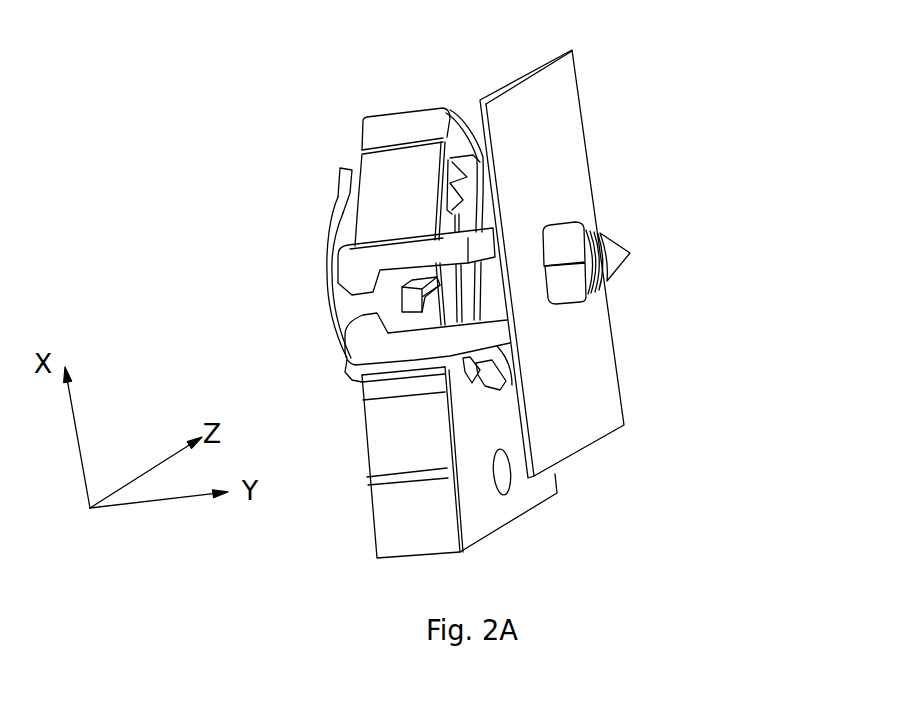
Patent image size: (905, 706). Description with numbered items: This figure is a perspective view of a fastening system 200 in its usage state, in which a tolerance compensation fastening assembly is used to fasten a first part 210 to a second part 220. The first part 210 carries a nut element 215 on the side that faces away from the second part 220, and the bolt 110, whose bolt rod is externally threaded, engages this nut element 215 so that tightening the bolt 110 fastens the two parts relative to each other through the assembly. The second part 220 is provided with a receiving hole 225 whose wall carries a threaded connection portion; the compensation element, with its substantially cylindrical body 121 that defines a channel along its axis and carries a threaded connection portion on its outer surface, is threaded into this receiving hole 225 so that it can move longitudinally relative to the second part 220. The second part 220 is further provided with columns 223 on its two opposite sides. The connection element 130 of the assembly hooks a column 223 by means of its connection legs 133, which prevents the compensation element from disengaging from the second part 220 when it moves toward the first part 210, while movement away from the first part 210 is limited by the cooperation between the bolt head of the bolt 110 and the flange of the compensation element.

The fastening system 200 is at (757, 146).
The first part 210 is at (570, 163).
The nut element 215 is at (562, 234).
The bolt 110 is at (608, 258).
The second part 220 is at (373, 163).
The body 121 is at (338, 227).
The receiving hole 225 is at (462, 126).
The column 223 is at (412, 302).
The connection element 130 is at (450, 350).
The connection legs 133 is at (367, 348).